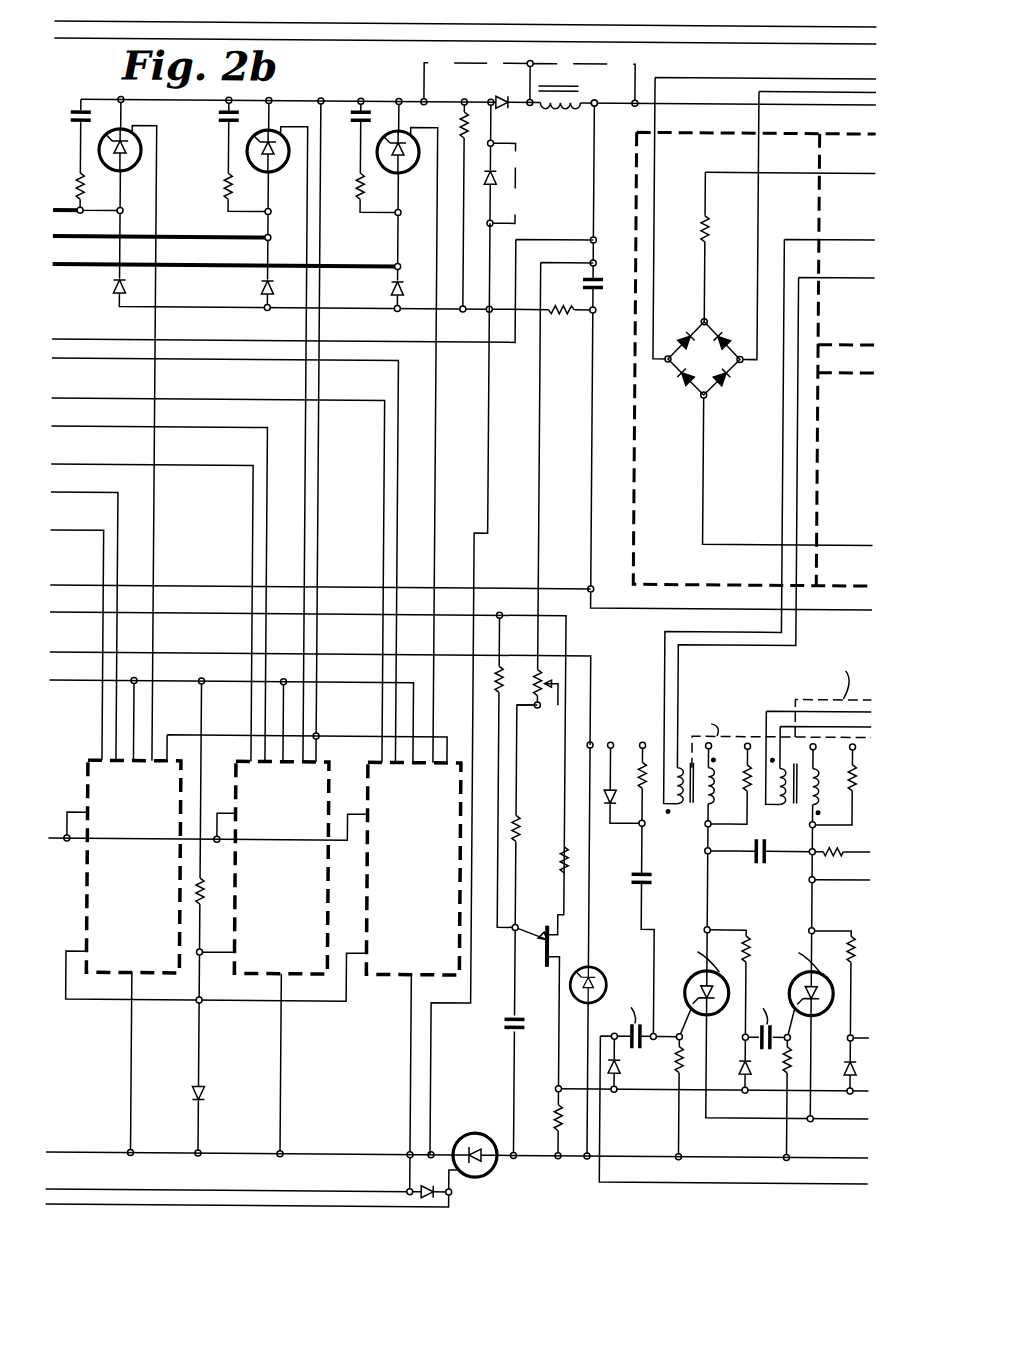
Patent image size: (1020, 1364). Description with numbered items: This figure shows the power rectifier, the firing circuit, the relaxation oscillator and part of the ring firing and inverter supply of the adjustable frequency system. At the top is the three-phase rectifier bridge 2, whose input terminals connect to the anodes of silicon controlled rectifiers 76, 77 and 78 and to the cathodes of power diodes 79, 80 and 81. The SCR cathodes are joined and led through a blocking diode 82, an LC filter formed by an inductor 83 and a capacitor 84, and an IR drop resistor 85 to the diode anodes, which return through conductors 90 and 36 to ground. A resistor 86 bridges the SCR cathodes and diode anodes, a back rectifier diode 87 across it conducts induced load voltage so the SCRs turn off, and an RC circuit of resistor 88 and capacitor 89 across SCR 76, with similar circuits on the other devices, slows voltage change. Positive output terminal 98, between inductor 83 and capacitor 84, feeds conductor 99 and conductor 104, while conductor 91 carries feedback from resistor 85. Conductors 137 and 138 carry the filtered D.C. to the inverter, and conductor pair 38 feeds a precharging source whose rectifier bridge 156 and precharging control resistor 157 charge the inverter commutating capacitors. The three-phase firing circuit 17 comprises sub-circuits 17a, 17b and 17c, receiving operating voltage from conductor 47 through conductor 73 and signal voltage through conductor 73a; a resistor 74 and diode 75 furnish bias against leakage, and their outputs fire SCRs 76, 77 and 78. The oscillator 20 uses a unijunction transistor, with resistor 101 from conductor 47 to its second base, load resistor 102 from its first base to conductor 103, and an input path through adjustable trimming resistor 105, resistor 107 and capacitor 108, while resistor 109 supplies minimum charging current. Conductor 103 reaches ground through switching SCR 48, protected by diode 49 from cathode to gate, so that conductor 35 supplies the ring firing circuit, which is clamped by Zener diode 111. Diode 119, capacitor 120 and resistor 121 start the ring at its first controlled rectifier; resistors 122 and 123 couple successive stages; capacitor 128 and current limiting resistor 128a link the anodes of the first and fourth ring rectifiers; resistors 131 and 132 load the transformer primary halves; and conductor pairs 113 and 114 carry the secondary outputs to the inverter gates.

The three-phase rectifier bridge 2 is at (348, 79).
The three-phase firing circuit 17 is at (273, 836).
The phase 1 firing sub-circuit 17a is at (140, 814).
The phase 2 firing sub-circuit 17b is at (287, 814).
The phase 3 firing sub-circuit 17c is at (421, 814).
The oscillator 20 is at (543, 760).
The positive D.C. conductor 35 is at (84, 654).
The ground conductor 36 is at (337, 1150).
The pair of conductors 38 is at (700, 29).
The conductor 47 is at (86, 614).
The silicon controlled rectifier 48 is at (472, 1132).
The unidirectional diode 49 is at (428, 1186).
The conductor 73 is at (88, 684).
The conductor 73a is at (68, 844).
The resistor 74 is at (205, 906).
The diode 75 is at (208, 1096).
The silicon controlled rectifier 76 is at (134, 171).
The silicon controlled rectifier 77 is at (282, 171).
The silicon controlled rectifier 78 is at (412, 171).
The power diode 79 is at (110, 289).
The power diode 80 is at (258, 289).
The power diode 81 is at (388, 289).
The blocking diode 82 is at (494, 100).
The inductor 83 is at (558, 108).
The capacitor 84 is at (600, 274).
The IR drop resistor 85 is at (563, 321).
The resistor 86 is at (456, 126).
The unidirectional diode 87 is at (484, 186).
The resistor 88 is at (81, 191).
The capacitor 89 is at (78, 112).
The conductor 90 is at (486, 425).
The conductor 91 is at (78, 586).
The positive output terminal 98 is at (595, 104).
The conductor 99 is at (88, 340).
The resistor 101 is at (562, 862).
The load resistor 102 is at (558, 1112).
The conductor 103 is at (548, 1160).
The conductor 104 is at (538, 479).
The adjustable resistor 105 is at (536, 666).
The resistor 107 is at (522, 828).
The capacitor 108 is at (504, 1028).
The resistor 109 is at (495, 682).
The Zener diode 111 is at (600, 966).
The pair of conductors 113 is at (664, 673).
The pair of conductors 114 is at (766, 716).
The diode 119 is at (610, 814).
The capacitor 120 is at (656, 880).
The resistor 121 is at (638, 778).
The resistor 122 is at (752, 941).
The resistor 123 is at (856, 941).
The capacitor 128 is at (764, 866).
The current limiting resistor 128a is at (856, 868).
The resistor 131 is at (733, 778).
The resistor 132 is at (852, 776).
The conductor 137 is at (718, 102).
The conductor 138 is at (672, 608).
The full-wave rectifier bridge 156 is at (716, 366).
The precharging control resistor 157 is at (699, 232).